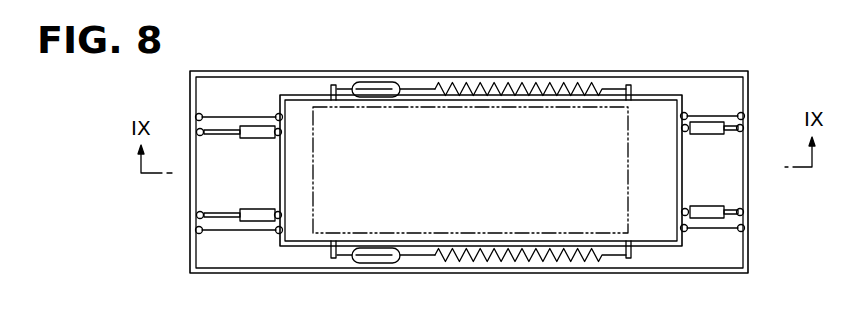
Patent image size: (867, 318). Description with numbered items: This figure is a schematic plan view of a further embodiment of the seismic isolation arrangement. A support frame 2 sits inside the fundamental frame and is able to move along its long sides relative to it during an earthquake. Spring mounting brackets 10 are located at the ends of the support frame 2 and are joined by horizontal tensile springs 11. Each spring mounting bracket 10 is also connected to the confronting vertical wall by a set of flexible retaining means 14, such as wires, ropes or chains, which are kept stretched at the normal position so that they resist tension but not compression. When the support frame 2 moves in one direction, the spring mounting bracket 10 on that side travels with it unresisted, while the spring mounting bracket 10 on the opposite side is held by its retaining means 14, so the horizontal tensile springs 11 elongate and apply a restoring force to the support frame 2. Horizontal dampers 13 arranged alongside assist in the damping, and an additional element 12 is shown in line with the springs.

The support frame 2 is at (477, 183).
The spring mounting bracket 10 is at (295, 248).
The horizontal tensile spring 11 is at (517, 81).
The damper 12 is at (377, 82).
The horizontal damper 13 is at (257, 128).
The flexible retaining means 14 is at (232, 114).